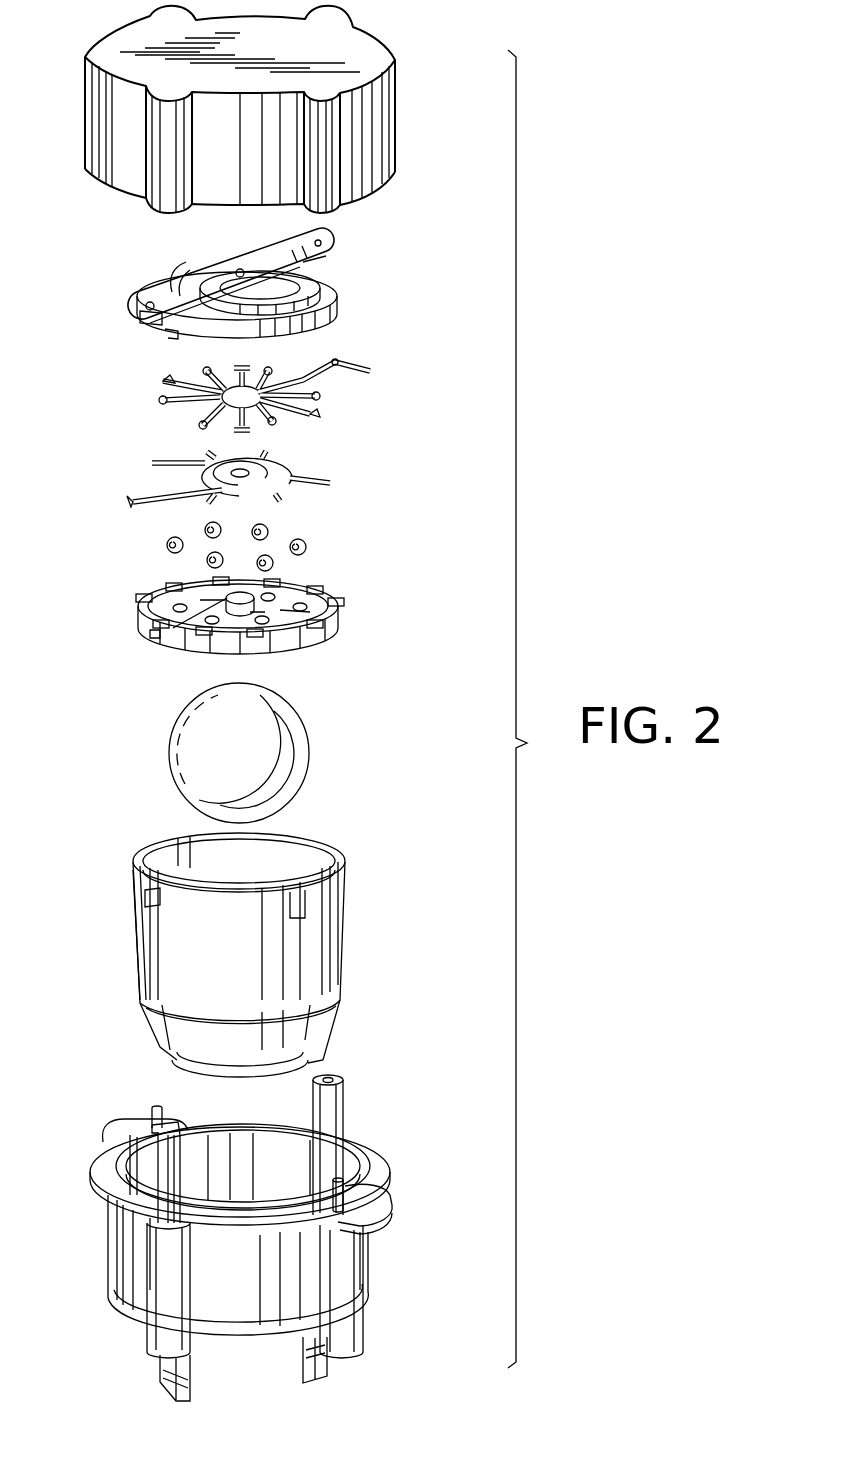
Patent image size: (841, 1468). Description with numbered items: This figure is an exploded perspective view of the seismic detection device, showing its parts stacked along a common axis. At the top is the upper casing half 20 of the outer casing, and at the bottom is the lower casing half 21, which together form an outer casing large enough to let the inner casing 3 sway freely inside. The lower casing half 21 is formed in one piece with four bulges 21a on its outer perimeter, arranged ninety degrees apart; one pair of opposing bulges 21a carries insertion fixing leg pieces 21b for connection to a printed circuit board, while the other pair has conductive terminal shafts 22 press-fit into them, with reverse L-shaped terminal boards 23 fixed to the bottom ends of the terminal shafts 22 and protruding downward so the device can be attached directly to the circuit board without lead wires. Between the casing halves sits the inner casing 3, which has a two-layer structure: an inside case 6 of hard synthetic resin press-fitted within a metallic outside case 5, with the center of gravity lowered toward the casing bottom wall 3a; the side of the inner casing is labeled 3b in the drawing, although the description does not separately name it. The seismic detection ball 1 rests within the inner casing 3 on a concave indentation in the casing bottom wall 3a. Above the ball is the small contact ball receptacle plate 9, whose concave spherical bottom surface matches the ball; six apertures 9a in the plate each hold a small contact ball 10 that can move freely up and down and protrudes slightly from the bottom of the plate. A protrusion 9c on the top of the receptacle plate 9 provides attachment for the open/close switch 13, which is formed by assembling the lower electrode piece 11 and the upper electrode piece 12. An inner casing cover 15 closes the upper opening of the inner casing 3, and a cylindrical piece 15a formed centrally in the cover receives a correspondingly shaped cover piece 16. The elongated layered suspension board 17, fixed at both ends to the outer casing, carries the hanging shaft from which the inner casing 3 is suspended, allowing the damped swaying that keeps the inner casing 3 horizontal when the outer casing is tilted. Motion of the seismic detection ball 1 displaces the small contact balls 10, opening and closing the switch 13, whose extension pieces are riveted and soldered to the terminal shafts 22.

The seismic detection ball 1 is at (300, 750).
The inner casing 3 is at (259, 957).
The casing bottom wall 3a is at (177, 1068).
The cup side wall 3b is at (148, 972).
The outside case 5 is at (147, 925).
The inside case 6 is at (150, 848).
The small contact ball receptacle plate 9 is at (228, 617).
The apertures 9a is at (176, 605).
The protrusion 9c is at (155, 633).
The small contact balls 10 is at (303, 545).
The lower electrode piece 11 is at (344, 465).
The upper electrode piece 12 is at (347, 392).
The open/close switch 13 is at (307, 433).
The inner casing cover 15 is at (242, 283).
The cylindrical piece 15a is at (320, 300).
The cover piece 16 is at (313, 272).
The layered suspension board 17 is at (126, 302).
The upper casing half 20 is at (413, 124).
The lower casing half 21 is at (286, 1238).
The bulges 21a is at (162, 1305).
The insertion fixing leg pieces 21b is at (160, 1385).
The conductive terminal shafts 22 is at (150, 1110).
The terminal boards 23 is at (323, 1372).